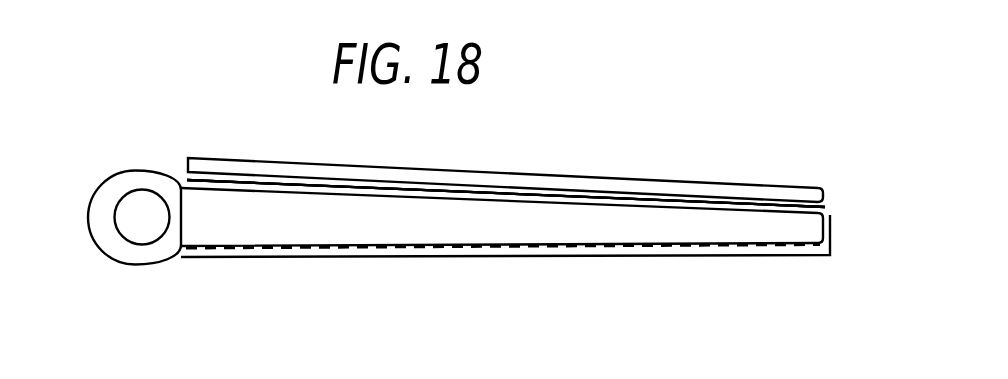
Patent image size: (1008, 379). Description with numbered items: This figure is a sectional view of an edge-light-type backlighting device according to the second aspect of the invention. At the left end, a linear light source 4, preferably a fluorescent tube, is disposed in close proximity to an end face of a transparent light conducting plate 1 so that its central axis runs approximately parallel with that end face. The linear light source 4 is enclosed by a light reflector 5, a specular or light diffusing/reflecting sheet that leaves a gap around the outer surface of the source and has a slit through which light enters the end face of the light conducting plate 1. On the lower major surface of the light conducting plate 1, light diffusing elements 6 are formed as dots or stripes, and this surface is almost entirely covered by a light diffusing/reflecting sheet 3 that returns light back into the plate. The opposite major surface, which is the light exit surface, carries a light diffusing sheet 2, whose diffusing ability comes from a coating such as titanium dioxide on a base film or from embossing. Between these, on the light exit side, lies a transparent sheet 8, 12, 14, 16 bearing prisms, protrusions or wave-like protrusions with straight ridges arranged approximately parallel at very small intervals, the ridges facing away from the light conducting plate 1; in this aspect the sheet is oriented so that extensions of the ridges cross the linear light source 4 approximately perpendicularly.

The light conducting plate 1 is at (663, 220).
The light diffusing sheet 2 is at (427, 190).
The light diffusing/reflecting sheet 3 is at (337, 257).
The linear light source 4 is at (142, 200).
The light reflector 5 is at (138, 267).
The light diffusing elements 6 is at (565, 245).
The transparent sheet 8 is at (523, 188).
The transparent sheet 12 is at (506, 193).
The transparent sheet 14 is at (506, 193).
The transparent sheet 16 is at (506, 193).